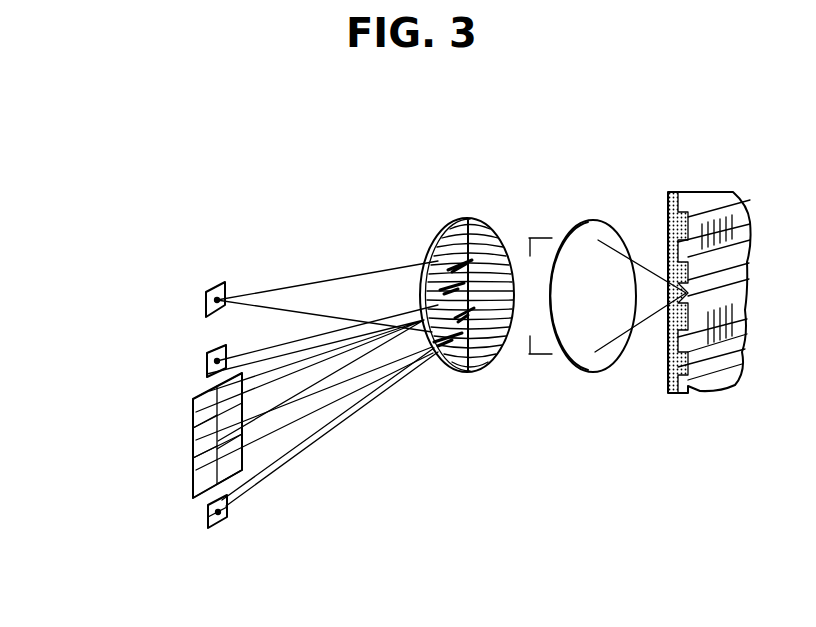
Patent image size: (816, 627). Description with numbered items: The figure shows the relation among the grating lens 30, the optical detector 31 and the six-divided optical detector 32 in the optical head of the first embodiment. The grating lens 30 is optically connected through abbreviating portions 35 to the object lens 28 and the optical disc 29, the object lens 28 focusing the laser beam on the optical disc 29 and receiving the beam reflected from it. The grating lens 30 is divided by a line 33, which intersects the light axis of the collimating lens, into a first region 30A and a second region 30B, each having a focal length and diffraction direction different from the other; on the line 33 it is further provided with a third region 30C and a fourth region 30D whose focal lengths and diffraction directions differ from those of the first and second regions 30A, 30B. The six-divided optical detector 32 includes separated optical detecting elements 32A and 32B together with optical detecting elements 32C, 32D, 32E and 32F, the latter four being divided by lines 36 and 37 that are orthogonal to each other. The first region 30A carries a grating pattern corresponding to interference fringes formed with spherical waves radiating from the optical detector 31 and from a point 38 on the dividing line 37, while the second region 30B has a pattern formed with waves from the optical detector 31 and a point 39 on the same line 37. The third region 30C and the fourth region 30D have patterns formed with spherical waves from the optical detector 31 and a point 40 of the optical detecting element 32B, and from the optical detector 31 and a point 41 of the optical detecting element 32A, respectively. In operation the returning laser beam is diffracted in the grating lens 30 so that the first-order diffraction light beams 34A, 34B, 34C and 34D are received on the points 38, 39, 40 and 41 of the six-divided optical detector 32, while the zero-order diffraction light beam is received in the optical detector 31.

The object lens 28 is at (597, 372).
The optical disc 29 is at (698, 396).
The grating lens 30 is at (435, 232).
The first region 30A is at (488, 378).
The second region 30B is at (453, 372).
The third region 30C is at (493, 262).
The fourth region 30D is at (505, 268).
The optical detector 31 is at (218, 290).
The six-divided optical detector 32 is at (110, 450).
The optical detecting element 32A is at (226, 522).
The optical detecting element 32B is at (210, 347).
The optical detecting element 32C is at (194, 400).
The optical detecting element 32D is at (238, 472).
The optical detecting element 32E is at (203, 405).
The optical detecting element 32F is at (198, 468).
The line 33 is at (468, 220).
The first-order diffraction light beam 34A is at (290, 392).
The first-order diffraction light beam 34B is at (272, 435).
The first-order diffraction light beam 34C is at (258, 482).
The first-order diffraction light beam 34D is at (276, 340).
The abbreviating portions 35 is at (530, 237).
The line 36 is at (202, 440).
The line 37 is at (200, 487).
The point 38 is at (215, 412).
The point 39 is at (203, 478).
The point 40 is at (207, 360).
The point 41 is at (215, 527).